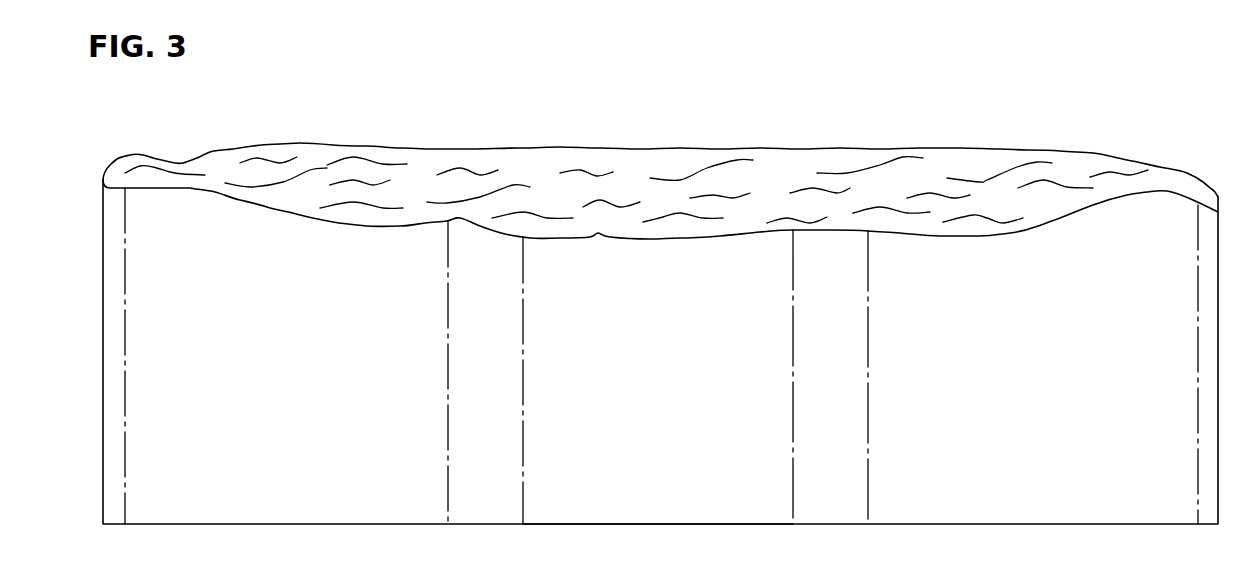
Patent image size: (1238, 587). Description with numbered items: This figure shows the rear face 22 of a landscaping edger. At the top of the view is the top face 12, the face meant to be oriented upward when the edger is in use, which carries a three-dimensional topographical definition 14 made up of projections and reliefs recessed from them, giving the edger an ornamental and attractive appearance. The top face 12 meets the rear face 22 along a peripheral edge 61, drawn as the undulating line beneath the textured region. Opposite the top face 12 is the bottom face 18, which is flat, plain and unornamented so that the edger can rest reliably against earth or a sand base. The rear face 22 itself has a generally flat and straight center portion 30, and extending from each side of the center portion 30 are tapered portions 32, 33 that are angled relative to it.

The top face 12 is at (640, 147).
The three-dimensional topographical definition 14 is at (466, 160).
The bottom face 18 is at (686, 526).
The rear face 22 is at (645, 362).
The center portion 30 is at (713, 433).
The tapered portion 32 is at (310, 351).
The tapered portion 33 is at (1022, 358).
The peripheral edge 61 is at (672, 238).